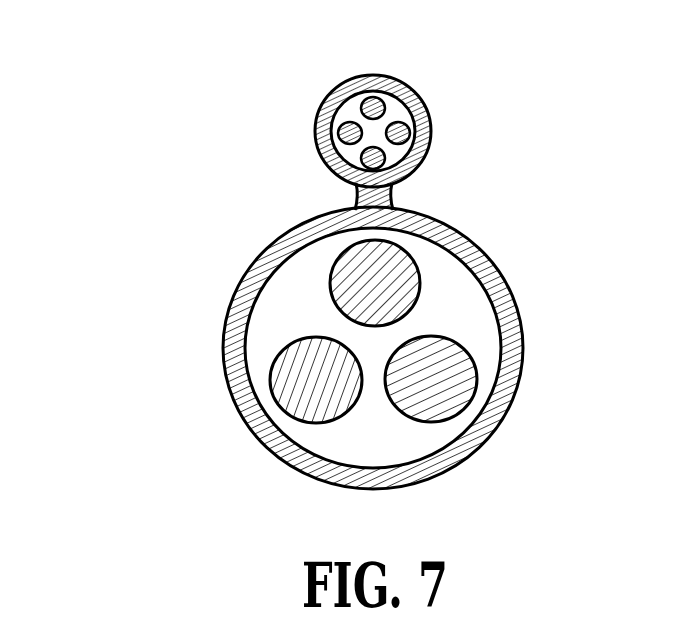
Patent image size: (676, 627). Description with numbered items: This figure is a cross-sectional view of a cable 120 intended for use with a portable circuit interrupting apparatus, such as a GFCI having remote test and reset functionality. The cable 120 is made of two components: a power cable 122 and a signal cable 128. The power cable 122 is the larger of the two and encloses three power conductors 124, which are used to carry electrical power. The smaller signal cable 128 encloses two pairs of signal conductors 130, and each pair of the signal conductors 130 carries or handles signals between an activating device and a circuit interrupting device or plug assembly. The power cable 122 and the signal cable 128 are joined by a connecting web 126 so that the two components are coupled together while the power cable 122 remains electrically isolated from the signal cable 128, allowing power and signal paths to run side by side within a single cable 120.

The cable 120 is at (148, 463).
The power cable 122 is at (523, 380).
The power conductors 124 is at (421, 283).
The web / neck connecting jacket to tether 126 is at (392, 198).
The signal cable 128 is at (433, 133).
The signal conductors 130 is at (386, 104).